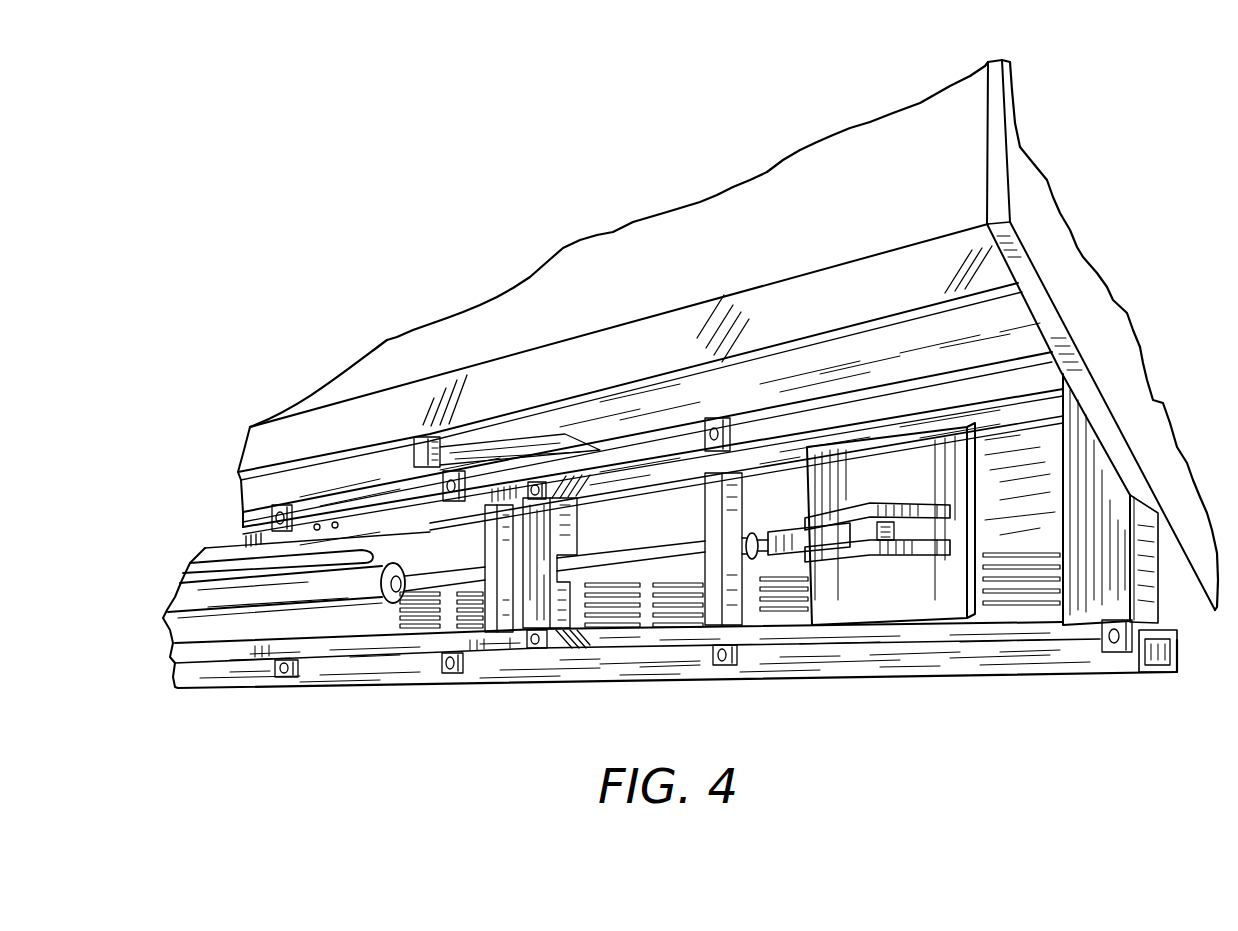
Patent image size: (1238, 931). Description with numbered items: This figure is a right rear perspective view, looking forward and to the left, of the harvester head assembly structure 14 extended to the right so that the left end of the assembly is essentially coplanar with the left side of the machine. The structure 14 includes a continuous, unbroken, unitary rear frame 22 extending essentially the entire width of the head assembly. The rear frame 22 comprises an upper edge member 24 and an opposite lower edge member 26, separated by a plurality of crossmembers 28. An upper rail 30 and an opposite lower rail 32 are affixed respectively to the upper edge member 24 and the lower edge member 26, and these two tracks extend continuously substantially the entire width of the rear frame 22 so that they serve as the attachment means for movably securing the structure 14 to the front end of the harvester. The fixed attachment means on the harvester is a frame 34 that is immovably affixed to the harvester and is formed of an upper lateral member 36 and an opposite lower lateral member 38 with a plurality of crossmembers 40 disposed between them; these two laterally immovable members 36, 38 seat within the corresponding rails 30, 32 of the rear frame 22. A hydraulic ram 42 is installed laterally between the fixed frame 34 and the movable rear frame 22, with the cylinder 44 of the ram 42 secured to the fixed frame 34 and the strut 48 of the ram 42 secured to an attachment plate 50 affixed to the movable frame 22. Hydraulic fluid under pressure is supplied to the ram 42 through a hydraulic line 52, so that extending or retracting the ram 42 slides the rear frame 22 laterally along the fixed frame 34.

The harvester head assembly structure 14 is at (444, 774).
The rear frame 22 is at (1158, 606).
The upper edge member 24 is at (607, 473).
The lower edge member 26 is at (655, 645).
The crossmembers 28 is at (485, 526).
The upper rail 30 is at (820, 398).
The lower rail 32 is at (980, 677).
The frame 34 is at (205, 548).
The upper lateral member 36 is at (420, 507).
The lower lateral member 38 is at (335, 647).
The crossmembers 40 is at (548, 505).
The hydraulic ram 42 is at (392, 606).
The cylinder 44 is at (222, 620).
The strut 48 is at (720, 560).
The attachment plate 50 is at (902, 480).
The hydraulic line 52 is at (233, 559).